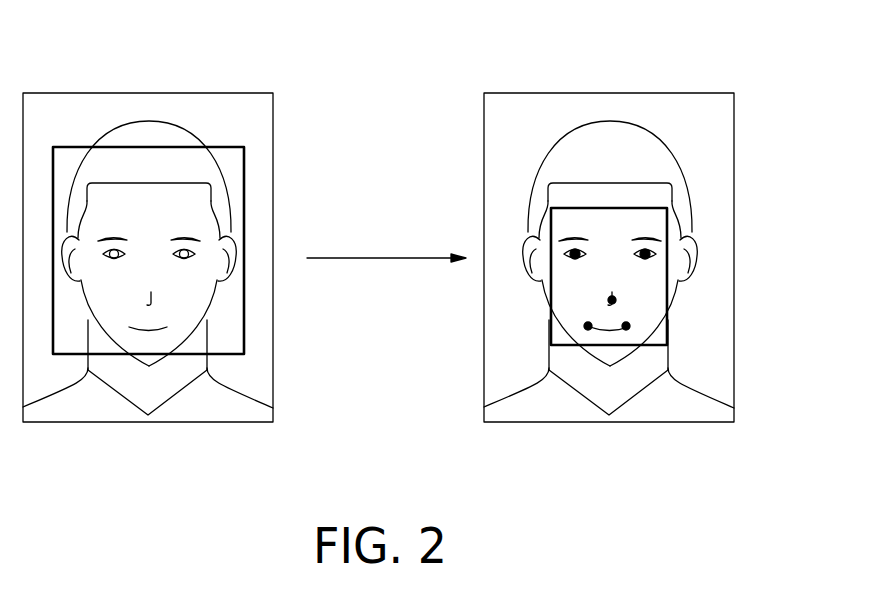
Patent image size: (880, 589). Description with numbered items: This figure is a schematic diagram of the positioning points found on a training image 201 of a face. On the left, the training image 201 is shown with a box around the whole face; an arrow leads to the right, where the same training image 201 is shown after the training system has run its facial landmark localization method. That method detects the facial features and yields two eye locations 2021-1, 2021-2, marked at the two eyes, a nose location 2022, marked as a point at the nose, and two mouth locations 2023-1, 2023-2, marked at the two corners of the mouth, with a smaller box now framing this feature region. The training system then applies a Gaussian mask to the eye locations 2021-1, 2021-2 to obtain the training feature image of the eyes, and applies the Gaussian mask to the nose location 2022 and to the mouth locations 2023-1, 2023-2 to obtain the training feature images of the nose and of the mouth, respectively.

The training image 201 is at (148, 423).
The eye location 2021-1 is at (562, 239).
The eye location 2021-2 is at (647, 242).
The nose location 2022 is at (612, 300).
The mouth location 2023-1 is at (588, 326).
The mouth location 2023-2 is at (626, 326).